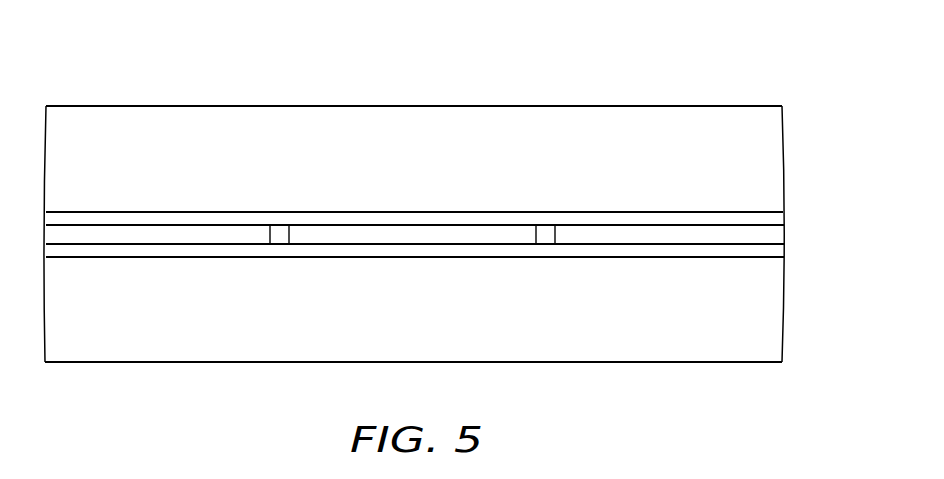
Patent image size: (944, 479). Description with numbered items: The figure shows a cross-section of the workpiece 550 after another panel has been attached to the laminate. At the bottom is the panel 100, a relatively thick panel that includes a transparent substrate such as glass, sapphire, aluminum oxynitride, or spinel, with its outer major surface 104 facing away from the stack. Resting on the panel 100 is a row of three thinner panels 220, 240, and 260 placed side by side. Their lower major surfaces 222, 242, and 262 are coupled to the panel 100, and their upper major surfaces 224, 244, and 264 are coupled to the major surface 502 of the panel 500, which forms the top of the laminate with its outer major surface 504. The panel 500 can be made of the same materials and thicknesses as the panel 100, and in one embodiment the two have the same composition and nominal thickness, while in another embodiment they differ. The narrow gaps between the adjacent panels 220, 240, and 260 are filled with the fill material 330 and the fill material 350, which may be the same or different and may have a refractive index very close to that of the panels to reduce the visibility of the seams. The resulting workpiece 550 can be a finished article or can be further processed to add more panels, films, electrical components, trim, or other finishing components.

The workpiece 550 is at (772, 74).
The panel 500 is at (688, 143).
The major surface of panel 500 504 is at (193, 111).
The major surface of panel 500 502 is at (498, 209).
The panel 100 is at (686, 347).
The major surface of panel 100 104 is at (234, 356).
The panel 220 is at (75, 235).
The major surface of panel 220 222 is at (91, 240).
The major surface of panel 220 224 is at (198, 229).
The fill material 330 is at (278, 235).
The panel 240 is at (398, 235).
The major surface of panel 240 242 is at (314, 239).
The major surface of panel 240 244 is at (456, 230).
The fill material 350 is at (546, 235).
The panel 260 is at (672, 235).
The major surface of panel 260 262 is at (598, 238).
The major surface of panel 260 264 is at (699, 232).